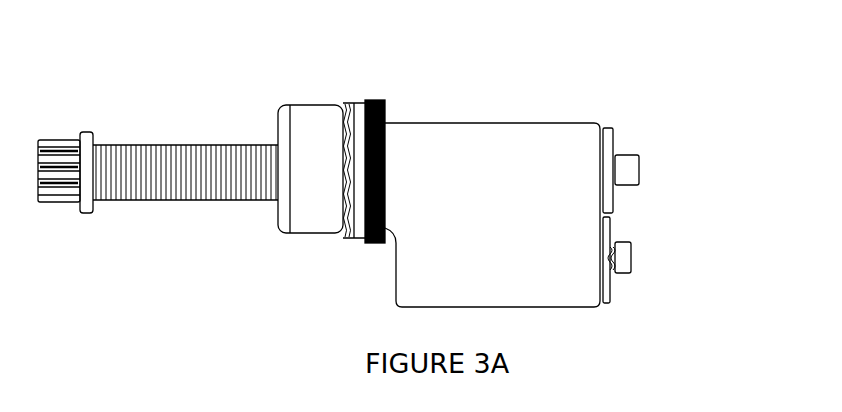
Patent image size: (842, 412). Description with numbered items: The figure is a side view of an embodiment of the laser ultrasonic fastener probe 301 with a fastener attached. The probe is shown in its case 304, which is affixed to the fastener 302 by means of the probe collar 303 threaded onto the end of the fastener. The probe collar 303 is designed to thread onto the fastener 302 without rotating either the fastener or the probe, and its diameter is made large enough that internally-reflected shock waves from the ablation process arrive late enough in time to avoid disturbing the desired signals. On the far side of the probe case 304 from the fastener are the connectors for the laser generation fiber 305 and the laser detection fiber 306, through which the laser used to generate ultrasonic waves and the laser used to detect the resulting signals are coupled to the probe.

The laser ultrasonic fastener probe 301 is at (285, 65).
The fastener 302 is at (153, 196).
The probe collar 303 is at (328, 105).
The probe case 304 is at (482, 128).
The connector for laser generation fiber 305 is at (633, 155).
The connector for laser detection fiber 306 is at (630, 247).